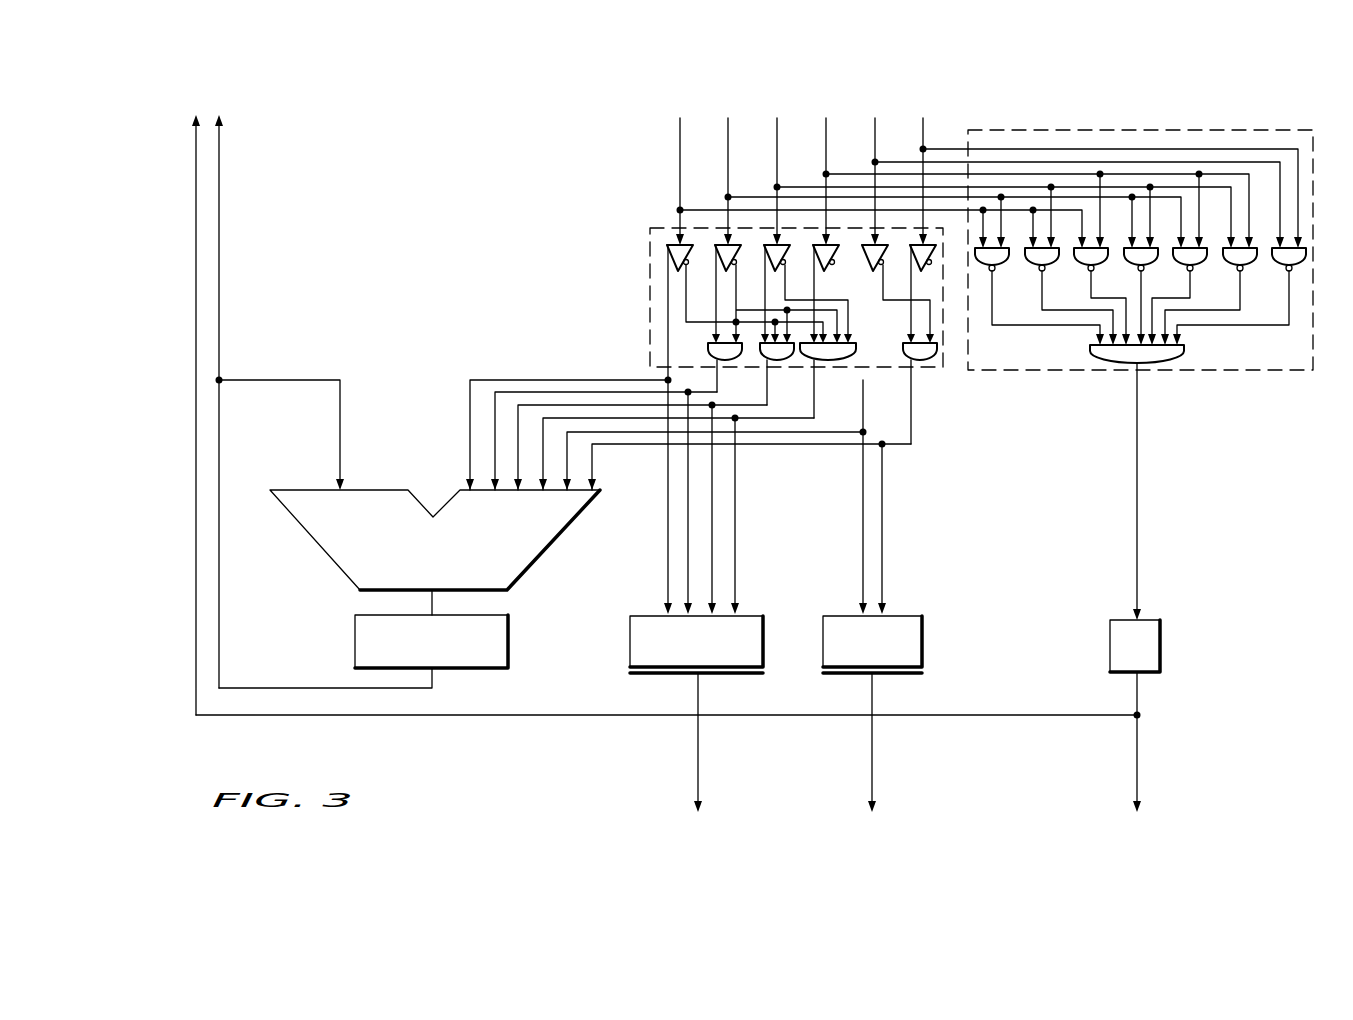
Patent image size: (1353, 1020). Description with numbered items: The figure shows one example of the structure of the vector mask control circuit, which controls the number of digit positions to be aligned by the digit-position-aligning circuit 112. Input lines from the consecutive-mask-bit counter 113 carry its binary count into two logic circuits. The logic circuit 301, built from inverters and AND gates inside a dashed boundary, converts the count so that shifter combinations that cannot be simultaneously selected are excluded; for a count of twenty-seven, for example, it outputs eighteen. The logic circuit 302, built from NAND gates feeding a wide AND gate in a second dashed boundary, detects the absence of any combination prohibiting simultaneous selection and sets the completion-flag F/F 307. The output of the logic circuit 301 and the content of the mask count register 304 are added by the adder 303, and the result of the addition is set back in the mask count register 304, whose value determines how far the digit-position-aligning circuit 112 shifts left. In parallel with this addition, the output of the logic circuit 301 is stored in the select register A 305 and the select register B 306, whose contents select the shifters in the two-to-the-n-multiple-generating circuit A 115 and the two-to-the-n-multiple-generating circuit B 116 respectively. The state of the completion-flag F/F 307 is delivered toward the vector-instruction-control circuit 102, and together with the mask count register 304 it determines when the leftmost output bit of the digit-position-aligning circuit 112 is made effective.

The digit-position-aligning circuit 112 is at (207, 402).
The consecutive-mask-bit counter 113 is at (670, 107).
The logic circuit 301 is at (927, 367).
The logic circuit 302 is at (1215, 370).
The adder 303 is at (556, 541).
The mask count register 304 is at (509, 621).
The select register A 305 is at (757, 613).
The select register B 306 is at (917, 613).
The completion-flag flip-flop 307 is at (1151, 621).
The 2^n-multiple-generating circuit A 115 is at (699, 756).
The 2^n-multiple-generating circuit B 116 is at (872, 756).
The vector-instruction-control circuit 102 is at (1140, 757).